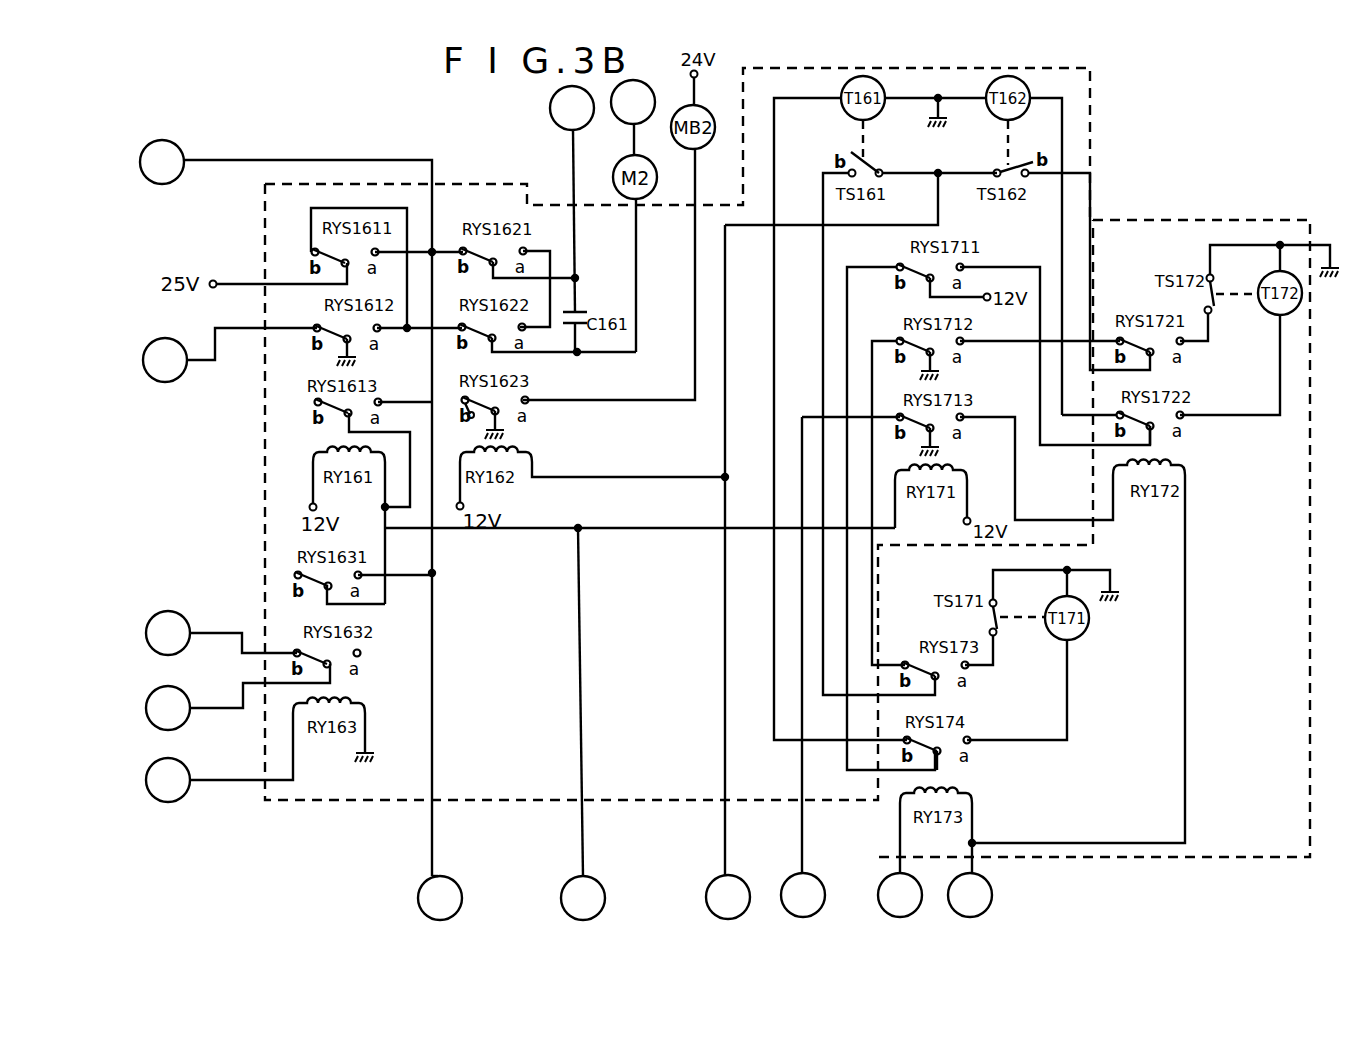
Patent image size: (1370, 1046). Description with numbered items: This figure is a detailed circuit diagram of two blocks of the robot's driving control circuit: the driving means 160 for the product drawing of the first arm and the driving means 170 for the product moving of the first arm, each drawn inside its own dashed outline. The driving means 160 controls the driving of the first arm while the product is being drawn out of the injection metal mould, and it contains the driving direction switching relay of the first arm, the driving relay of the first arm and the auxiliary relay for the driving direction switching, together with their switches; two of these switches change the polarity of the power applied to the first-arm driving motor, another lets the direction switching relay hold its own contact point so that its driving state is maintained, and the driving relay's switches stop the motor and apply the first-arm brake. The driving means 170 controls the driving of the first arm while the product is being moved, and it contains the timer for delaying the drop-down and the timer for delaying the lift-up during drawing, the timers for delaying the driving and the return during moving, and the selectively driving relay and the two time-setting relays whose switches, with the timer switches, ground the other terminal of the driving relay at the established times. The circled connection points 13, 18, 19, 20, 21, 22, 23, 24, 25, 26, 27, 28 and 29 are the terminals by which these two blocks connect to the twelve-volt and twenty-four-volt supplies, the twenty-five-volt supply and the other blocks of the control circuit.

The terminal 13 is at (823, 544).
The terminal 18 is at (287, 508).
The terminal 19 is at (230, 355).
The terminal 20 is at (221, 633).
The terminal 21 is at (238, 697).
The terminal 22 is at (219, 757).
The terminal 23 is at (440, 898).
The terminal 24 is at (583, 722).
The terminal 25 is at (633, 117).
The terminal 26 is at (572, 199).
The terminal 27 is at (840, 667).
The terminal 28 is at (900, 860).
The terminal 29 is at (1066, 696).
The driving means for the product drawing of first arm 160 is at (265, 481).
The driving means for the product moving of first arm 170 is at (1143, 220).